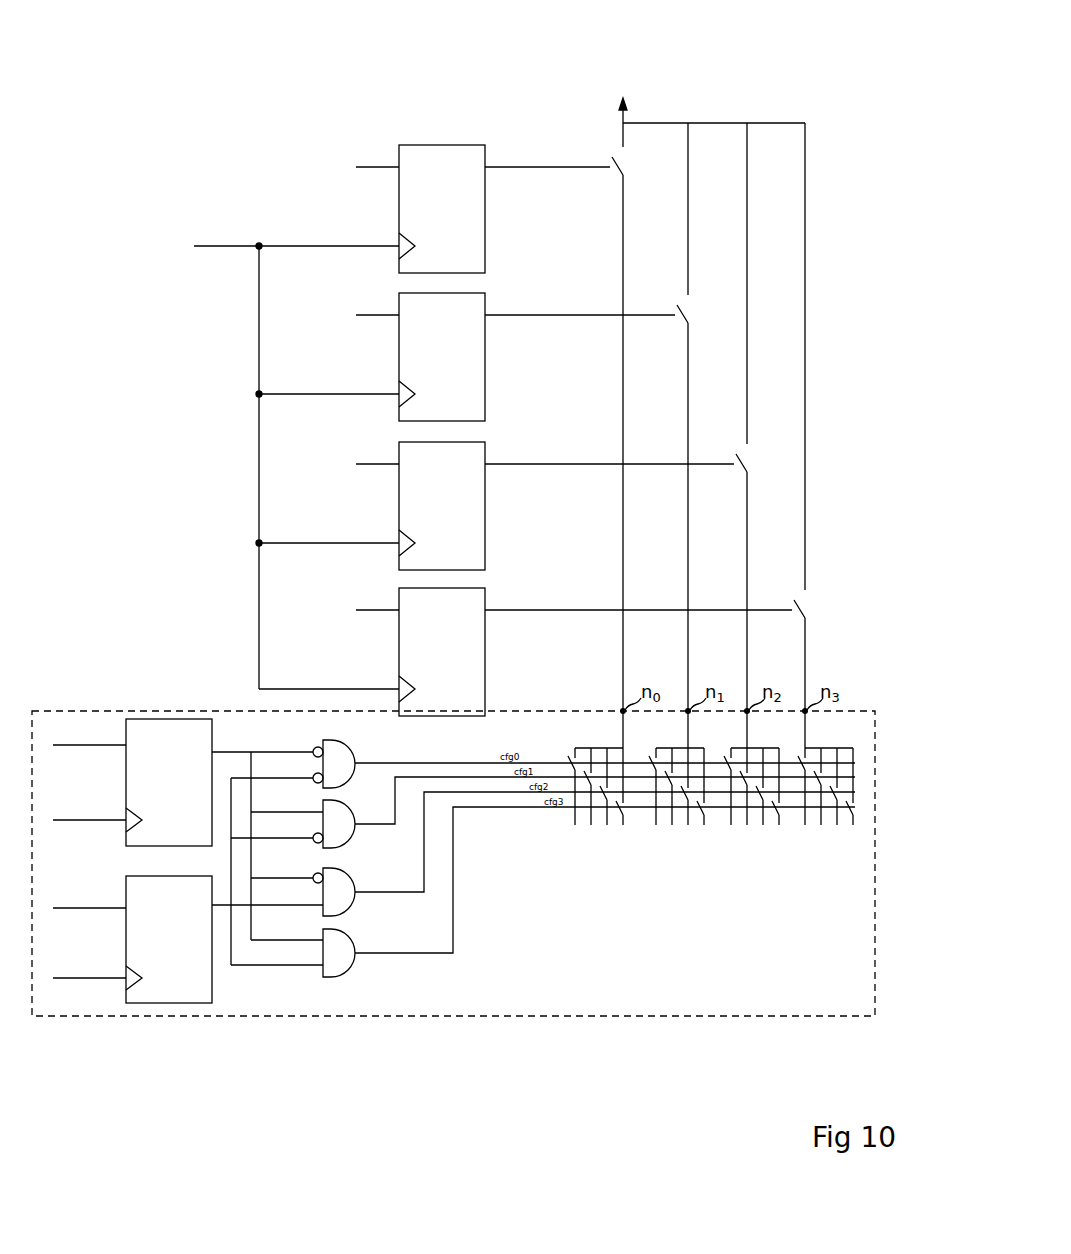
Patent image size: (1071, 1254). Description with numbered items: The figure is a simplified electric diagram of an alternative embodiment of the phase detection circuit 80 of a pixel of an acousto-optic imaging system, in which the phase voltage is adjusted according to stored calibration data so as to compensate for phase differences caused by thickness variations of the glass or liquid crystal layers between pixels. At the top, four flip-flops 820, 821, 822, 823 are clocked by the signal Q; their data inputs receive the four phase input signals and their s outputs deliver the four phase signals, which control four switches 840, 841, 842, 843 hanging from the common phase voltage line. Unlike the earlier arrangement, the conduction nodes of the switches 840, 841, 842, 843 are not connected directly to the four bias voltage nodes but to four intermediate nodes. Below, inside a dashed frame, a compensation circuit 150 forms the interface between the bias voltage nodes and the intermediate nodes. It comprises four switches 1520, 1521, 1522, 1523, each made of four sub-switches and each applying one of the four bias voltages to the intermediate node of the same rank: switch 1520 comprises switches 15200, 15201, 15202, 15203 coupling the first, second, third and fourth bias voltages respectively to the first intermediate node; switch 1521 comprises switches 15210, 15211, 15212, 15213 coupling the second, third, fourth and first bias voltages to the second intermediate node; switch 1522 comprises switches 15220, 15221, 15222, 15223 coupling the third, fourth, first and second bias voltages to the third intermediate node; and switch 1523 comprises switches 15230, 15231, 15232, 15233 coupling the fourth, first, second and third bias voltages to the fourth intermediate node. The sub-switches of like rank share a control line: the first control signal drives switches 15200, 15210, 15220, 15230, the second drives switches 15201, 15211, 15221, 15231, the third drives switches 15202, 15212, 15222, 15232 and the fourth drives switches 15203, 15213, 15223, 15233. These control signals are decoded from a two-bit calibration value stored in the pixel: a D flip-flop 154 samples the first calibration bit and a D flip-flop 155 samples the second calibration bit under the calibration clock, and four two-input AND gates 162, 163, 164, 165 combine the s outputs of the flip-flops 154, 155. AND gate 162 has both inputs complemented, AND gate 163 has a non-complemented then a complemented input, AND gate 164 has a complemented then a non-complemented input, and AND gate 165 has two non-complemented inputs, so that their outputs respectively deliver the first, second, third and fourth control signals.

The phase detection circuit 80 is at (192, 108).
The flip-flop 820 is at (485, 229).
The flip-flop 821 is at (485, 377).
The flip-flop 822 is at (485, 526).
The flip-flop 823 is at (485, 672).
The switch 840 is at (624, 165).
The switch 841 is at (689, 313).
The switch 842 is at (748, 462).
The switch 843 is at (806, 608).
The compensation circuit 150 is at (222, 1016).
The D flip-flop 154 is at (151, 718).
The D flip-flop 155 is at (152, 1003).
The AND gate 162 is at (374, 730).
The AND gate 163 is at (352, 810).
The AND gate 164 is at (355, 884).
The AND gate 165 is at (355, 942).
The switch 1520 is at (598, 748).
The switch 1521 is at (680, 748).
The switch 1522 is at (775, 745).
The switch 1523 is at (843, 745).
The switch 15200 is at (569, 764).
The switch 15201 is at (585, 779).
The switch 15202 is at (601, 794).
The switch 15203 is at (617, 809).
The switch 15210 is at (650, 764).
The switch 15211 is at (666, 779).
The switch 15212 is at (682, 794).
The switch 15213 is at (698, 809).
The switch 15220 is at (725, 764).
The switch 15221 is at (741, 779).
The switch 15222 is at (757, 794).
The switch 15223 is at (773, 809).
The switch 15230 is at (806, 762).
The switch 15231 is at (822, 777).
The switch 15232 is at (838, 792).
The switch 15233 is at (854, 807).